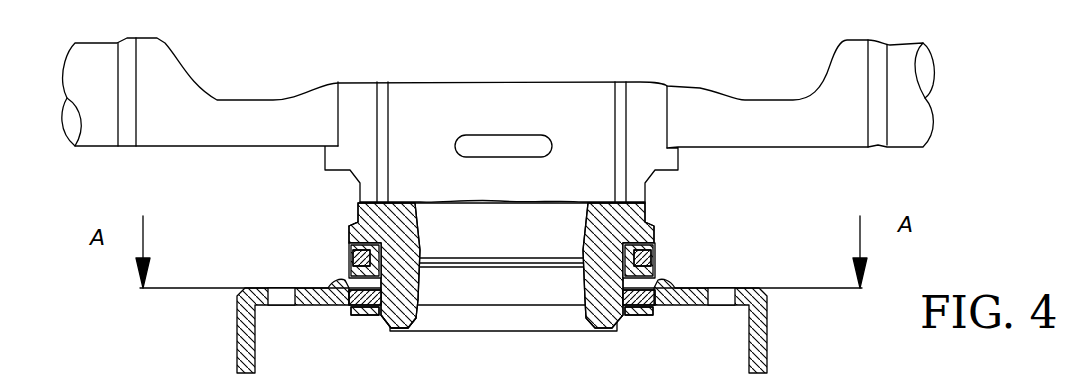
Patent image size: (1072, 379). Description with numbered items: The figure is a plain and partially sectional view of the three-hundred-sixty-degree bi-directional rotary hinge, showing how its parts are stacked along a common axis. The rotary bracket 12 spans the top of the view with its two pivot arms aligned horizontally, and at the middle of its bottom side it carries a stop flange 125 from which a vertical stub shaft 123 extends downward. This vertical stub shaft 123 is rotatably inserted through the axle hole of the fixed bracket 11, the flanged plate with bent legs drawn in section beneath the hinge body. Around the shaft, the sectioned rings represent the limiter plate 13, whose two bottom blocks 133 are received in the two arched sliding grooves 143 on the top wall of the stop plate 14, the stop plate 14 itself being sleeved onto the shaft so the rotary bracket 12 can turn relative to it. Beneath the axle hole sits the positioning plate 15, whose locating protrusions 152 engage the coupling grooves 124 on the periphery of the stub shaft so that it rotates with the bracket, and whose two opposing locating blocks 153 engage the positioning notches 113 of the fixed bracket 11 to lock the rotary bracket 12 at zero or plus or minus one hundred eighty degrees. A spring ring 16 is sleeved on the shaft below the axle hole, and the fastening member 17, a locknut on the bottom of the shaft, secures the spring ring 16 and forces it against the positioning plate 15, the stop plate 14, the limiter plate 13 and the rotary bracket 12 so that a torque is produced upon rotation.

The fixed bracket 11 is at (228, 327).
The rotary bracket 12 is at (527, 81).
The limiter plate 13 is at (656, 246).
The stop plate 14 is at (657, 267).
The positioning plate 15 is at (657, 304).
The spring ring 16 is at (641, 314).
The fastening member 17 is at (504, 333).
The positioning notches 113 is at (364, 284).
The vertical stub shaft 123 is at (395, 262).
The coupling grooves 124 is at (620, 332).
The stop flange 125 is at (352, 228).
The bottom blocks 133 is at (349, 234).
The arched sliding grooves 143 is at (349, 270).
The locating protrusions 152 is at (399, 333).
The locating blocks 153 is at (353, 308).